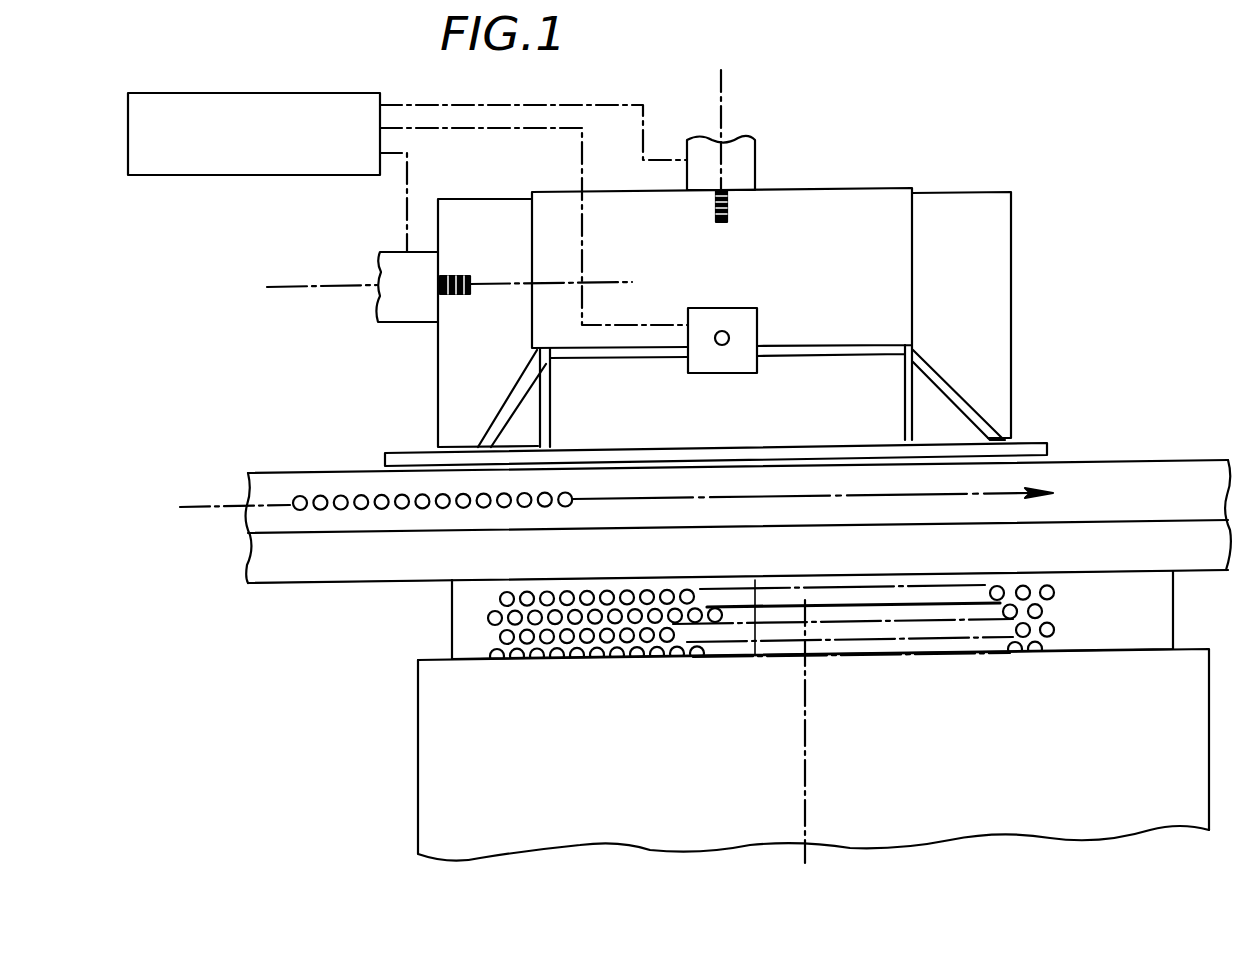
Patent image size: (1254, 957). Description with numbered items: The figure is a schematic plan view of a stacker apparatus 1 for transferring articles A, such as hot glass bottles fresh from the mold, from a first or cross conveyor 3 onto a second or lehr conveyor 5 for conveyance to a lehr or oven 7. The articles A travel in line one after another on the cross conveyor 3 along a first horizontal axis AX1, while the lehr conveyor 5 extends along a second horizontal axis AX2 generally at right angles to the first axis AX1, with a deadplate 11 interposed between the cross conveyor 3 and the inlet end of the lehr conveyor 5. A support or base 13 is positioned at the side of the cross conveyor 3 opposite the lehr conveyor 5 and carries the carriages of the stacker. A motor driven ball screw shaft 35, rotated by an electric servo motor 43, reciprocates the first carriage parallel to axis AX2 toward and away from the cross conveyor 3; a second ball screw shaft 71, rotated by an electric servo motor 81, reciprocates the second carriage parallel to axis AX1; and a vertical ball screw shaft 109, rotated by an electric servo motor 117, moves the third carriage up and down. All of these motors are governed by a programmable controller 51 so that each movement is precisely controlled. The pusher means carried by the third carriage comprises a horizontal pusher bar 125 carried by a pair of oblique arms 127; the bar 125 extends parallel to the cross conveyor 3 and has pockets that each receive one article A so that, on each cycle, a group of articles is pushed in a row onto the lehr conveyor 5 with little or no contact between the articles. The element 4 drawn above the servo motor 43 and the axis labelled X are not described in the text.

The apparatus (stacker) 1 is at (897, 173).
The first conveyor (cross conveyor) 3 is at (266, 488).
The drive rod 4 is at (724, 125).
The second conveyor (lehr conveyor) 5 is at (450, 618).
The lehr or oven 7 is at (418, 778).
The deadplate 11 is at (333, 585).
The support or base 13 is at (1013, 345).
The ball screw shaft 35 is at (729, 212).
The electric servo motor 43 is at (758, 160).
The programmable controller 51 is at (348, 176).
The ball screw shaft 71 is at (452, 277).
The electric servo motor 81 is at (405, 323).
The ball screw shaft 109 is at (726, 331).
The electric servo motor 117 is at (758, 331).
The pusher bar 125 is at (1050, 448).
The horizontal arms 127 is at (520, 386).
The articles A is at (382, 495).
The axis X is at (290, 287).
The first axis AX1 is at (200, 503).
The second horizontal axis AX2 is at (805, 775).